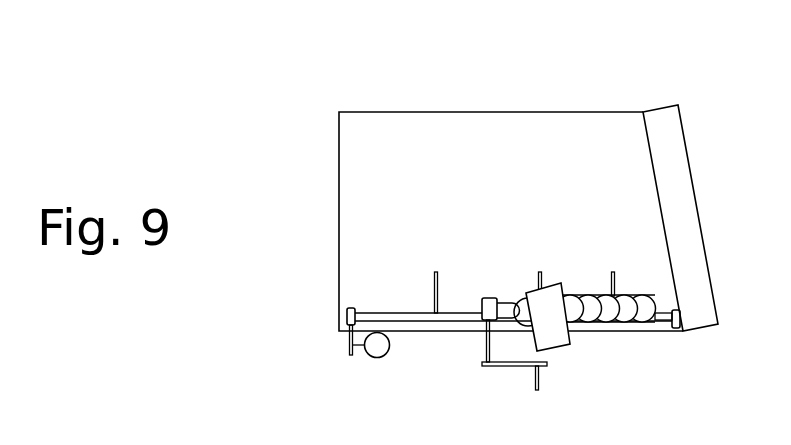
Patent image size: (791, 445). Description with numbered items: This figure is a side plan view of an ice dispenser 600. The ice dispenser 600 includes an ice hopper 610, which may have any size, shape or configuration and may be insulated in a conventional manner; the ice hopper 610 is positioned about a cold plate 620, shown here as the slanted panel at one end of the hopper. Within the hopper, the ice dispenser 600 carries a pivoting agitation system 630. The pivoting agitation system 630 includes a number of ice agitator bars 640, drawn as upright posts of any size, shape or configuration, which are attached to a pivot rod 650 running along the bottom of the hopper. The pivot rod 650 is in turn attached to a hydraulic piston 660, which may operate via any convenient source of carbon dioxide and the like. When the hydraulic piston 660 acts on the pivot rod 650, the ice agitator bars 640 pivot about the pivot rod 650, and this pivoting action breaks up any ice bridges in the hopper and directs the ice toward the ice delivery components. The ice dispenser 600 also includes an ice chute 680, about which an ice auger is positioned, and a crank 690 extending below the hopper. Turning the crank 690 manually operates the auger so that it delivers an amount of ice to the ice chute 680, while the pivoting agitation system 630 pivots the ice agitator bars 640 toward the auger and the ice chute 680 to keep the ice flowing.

The ice dispenser 600 is at (373, 84).
The ice hopper 610 is at (557, 111).
The cold plate 620 is at (696, 191).
The pivoting agitation system 630 is at (400, 300).
The ice agitator bars 640 is at (439, 291).
The pivot rod 650 is at (346, 308).
The hydraulic piston 660 is at (383, 356).
The ice chute 680 is at (572, 343).
The crank 690 is at (540, 380).